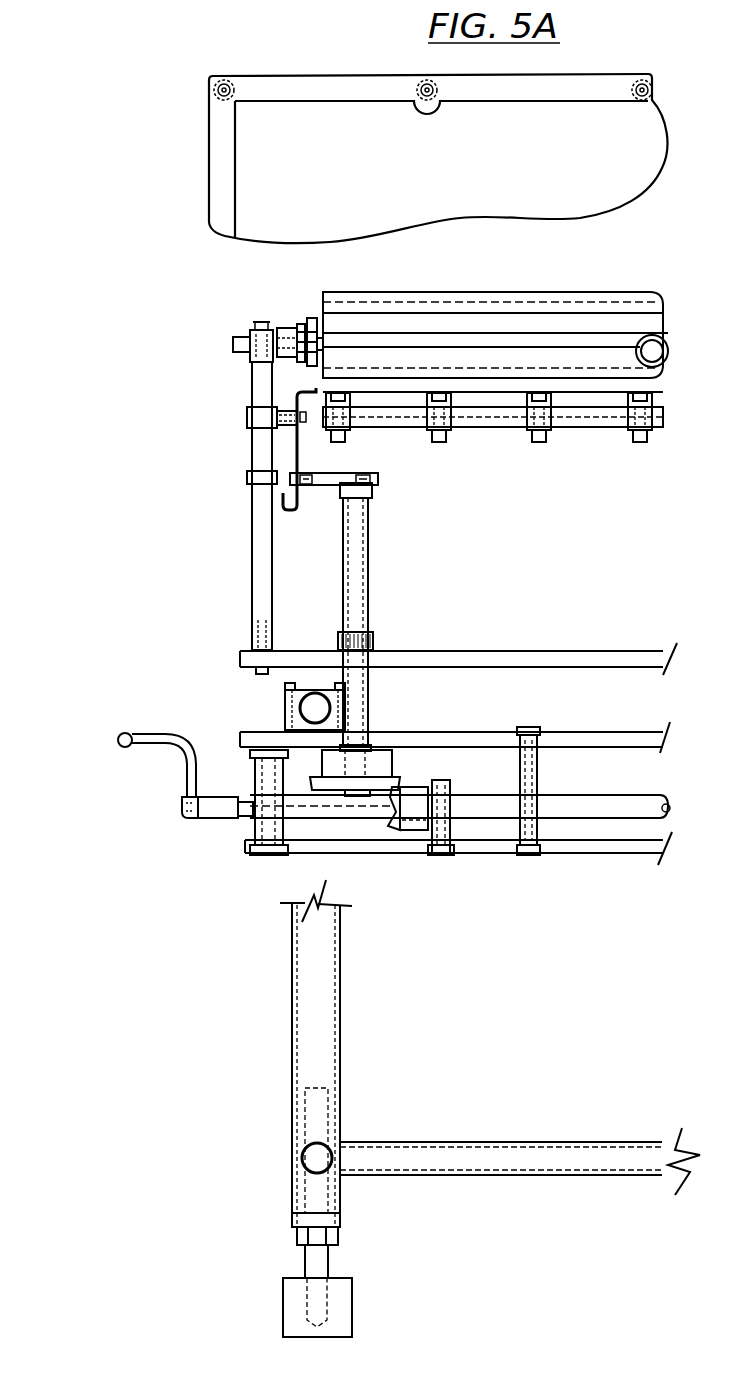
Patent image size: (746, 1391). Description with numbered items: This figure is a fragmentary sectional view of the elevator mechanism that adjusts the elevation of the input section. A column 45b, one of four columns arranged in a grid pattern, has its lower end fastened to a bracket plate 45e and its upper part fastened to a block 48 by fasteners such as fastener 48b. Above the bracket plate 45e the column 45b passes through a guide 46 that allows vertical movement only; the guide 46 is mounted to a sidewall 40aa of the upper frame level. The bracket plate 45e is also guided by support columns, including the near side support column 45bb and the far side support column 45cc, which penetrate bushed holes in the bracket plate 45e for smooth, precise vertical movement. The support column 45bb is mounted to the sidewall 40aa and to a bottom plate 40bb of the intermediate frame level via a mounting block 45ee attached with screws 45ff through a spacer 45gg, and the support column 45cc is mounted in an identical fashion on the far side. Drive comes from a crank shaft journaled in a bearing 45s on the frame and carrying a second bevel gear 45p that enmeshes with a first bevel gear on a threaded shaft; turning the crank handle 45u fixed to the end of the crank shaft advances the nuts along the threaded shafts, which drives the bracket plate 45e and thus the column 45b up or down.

The fastener 48b is at (253, 324).
The block 48 is at (249, 334).
The sidewall 40aa is at (296, 404).
The guide 46 is at (246, 414).
The screws 45ff is at (292, 478).
The spacer 45gg is at (318, 490).
The mounting block 45ee is at (374, 470).
The support column 45bb is at (369, 578).
The column 45b is at (252, 620).
The support column 45cc is at (377, 638).
The bracket plate 45e is at (239, 655).
The crank handle 45u is at (181, 779).
The bearing 45s is at (425, 833).
The second bevel gear 45p is at (390, 832).
The bottom plate 40bb is at (558, 853).